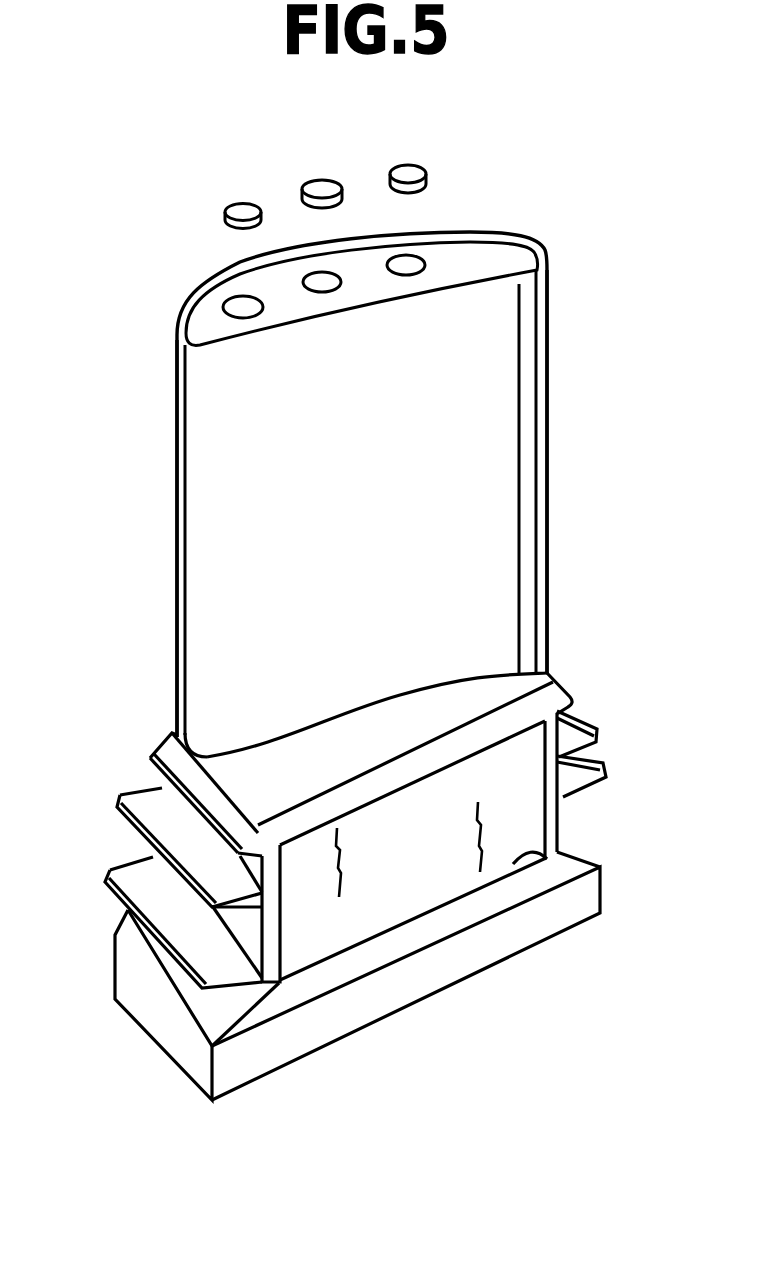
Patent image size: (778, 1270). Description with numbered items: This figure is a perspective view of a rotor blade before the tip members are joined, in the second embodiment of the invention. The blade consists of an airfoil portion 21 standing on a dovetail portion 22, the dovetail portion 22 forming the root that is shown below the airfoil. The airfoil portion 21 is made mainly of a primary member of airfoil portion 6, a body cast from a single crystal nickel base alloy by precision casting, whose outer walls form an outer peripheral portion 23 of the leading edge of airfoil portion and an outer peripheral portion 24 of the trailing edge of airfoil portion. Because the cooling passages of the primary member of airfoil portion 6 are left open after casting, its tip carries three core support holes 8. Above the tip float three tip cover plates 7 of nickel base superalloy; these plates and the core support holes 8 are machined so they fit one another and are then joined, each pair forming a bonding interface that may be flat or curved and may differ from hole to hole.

The primary member of airfoil portion 6 is at (208, 633).
The tip cover plates 7 is at (392, 167).
The core support holes 8 is at (262, 313).
The airfoil portion 21 is at (412, 530).
The dovetail portion 22 is at (415, 857).
The outer peripheral portion of the leading edge of airfoil portion 23 is at (177, 483).
The outer peripheral portion of the trailing edge of airfoil portion 24 is at (548, 465).